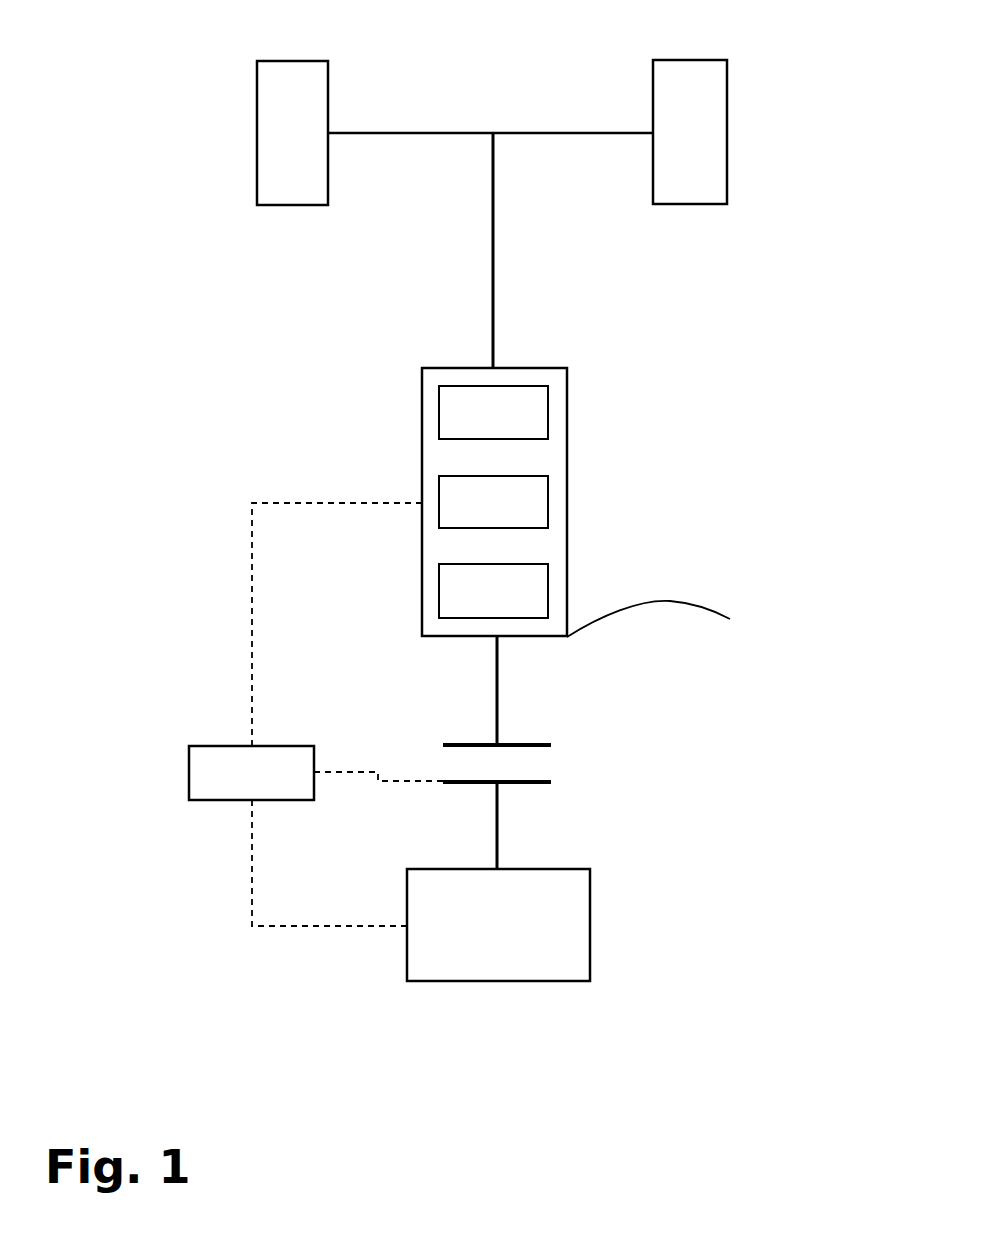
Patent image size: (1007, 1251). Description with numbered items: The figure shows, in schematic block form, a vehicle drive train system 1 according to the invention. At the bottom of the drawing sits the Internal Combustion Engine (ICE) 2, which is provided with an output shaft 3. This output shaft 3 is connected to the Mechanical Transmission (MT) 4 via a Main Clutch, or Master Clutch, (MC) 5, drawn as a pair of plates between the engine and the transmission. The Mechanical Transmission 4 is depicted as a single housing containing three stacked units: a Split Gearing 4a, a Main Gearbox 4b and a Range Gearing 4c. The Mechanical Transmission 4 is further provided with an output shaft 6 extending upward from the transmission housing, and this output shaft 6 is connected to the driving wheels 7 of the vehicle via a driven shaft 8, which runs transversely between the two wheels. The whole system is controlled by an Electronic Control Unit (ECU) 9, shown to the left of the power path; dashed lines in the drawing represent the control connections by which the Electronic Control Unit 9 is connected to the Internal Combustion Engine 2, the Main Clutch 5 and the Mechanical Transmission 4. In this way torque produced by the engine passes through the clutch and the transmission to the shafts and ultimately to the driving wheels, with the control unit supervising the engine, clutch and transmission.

The drive train system 1 is at (284, 324).
The internal combustion engine 2 is at (590, 921).
The output shaft 3 is at (497, 843).
The mechanical transmission 4 is at (537, 502).
The split gearing 4a is at (548, 588).
The main gearbox 4b is at (548, 497).
The range gearing 4c is at (548, 410).
The main clutch 5 is at (535, 762).
The output shaft 6 is at (494, 300).
The driving wheels 7 is at (257, 112).
The driven shaft 8 is at (363, 131).
The electronic control unit 9 is at (206, 800).